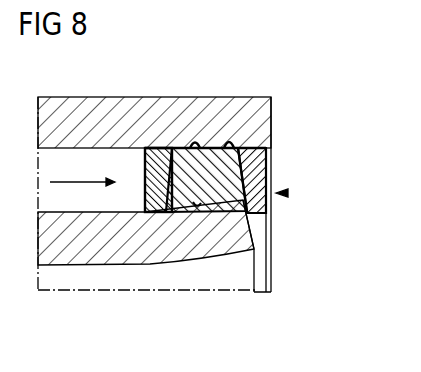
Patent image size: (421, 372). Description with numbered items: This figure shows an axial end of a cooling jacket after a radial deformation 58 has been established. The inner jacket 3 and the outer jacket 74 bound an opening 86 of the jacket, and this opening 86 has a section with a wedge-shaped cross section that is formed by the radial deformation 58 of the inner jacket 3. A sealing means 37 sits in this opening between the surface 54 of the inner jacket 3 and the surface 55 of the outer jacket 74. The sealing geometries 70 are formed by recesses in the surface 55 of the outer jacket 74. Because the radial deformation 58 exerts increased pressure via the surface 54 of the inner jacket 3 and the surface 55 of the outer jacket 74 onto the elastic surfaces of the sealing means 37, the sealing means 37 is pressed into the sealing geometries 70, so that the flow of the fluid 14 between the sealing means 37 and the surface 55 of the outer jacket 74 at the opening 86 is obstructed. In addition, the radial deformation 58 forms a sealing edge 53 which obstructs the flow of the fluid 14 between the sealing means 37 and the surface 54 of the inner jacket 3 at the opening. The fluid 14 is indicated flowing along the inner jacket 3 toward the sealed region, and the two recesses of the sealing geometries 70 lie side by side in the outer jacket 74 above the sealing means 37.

The inner jacket 3 is at (67, 242).
The fluid 14 is at (77, 182).
The outer jacket 74 is at (145, 105).
The sealing geometries 70 is at (230, 140).
The sealing edge 53 is at (243, 148).
The sealing means 37 is at (263, 172).
The opening 86 is at (287, 193).
The surface of the outer jacket 55 is at (187, 150).
The surface of the inner jacket 54 is at (196, 205).
The radial deformation 58 is at (228, 228).